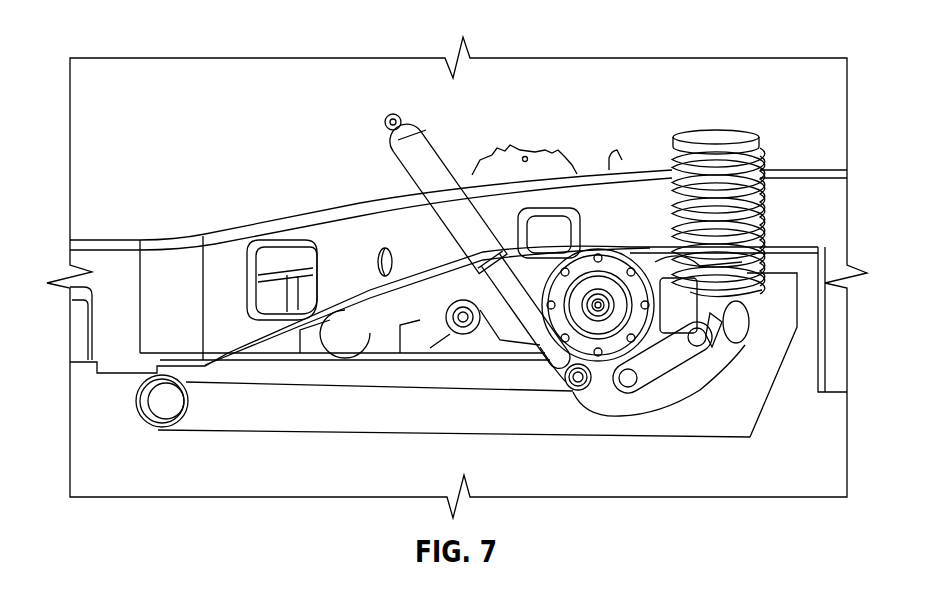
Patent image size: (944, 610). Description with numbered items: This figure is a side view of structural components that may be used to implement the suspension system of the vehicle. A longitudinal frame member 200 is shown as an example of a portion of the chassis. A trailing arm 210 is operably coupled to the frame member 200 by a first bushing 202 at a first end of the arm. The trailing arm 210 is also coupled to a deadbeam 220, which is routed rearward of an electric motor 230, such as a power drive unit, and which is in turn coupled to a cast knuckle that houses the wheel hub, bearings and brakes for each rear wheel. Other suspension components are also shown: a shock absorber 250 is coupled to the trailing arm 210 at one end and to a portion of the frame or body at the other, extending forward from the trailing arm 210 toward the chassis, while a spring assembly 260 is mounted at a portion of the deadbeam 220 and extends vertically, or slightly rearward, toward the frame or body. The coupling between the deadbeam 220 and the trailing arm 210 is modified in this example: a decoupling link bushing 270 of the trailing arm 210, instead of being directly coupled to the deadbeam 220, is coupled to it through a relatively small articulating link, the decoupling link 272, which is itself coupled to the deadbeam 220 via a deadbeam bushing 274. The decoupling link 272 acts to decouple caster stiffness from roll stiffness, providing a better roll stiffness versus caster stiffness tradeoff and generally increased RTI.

The longitudinal frame member 200 is at (231, 246).
The first bushing 202 is at (135, 395).
The trailing arm 210 is at (356, 410).
The deadbeam 220 is at (683, 372).
The electric motor 230 is at (503, 167).
The shock absorber 250 is at (407, 151).
The spring assembly 260 is at (730, 200).
The decoupling link bushing 270 is at (628, 390).
The decoupling link 272 is at (655, 362).
The deadbeam bushing 274 is at (663, 402).